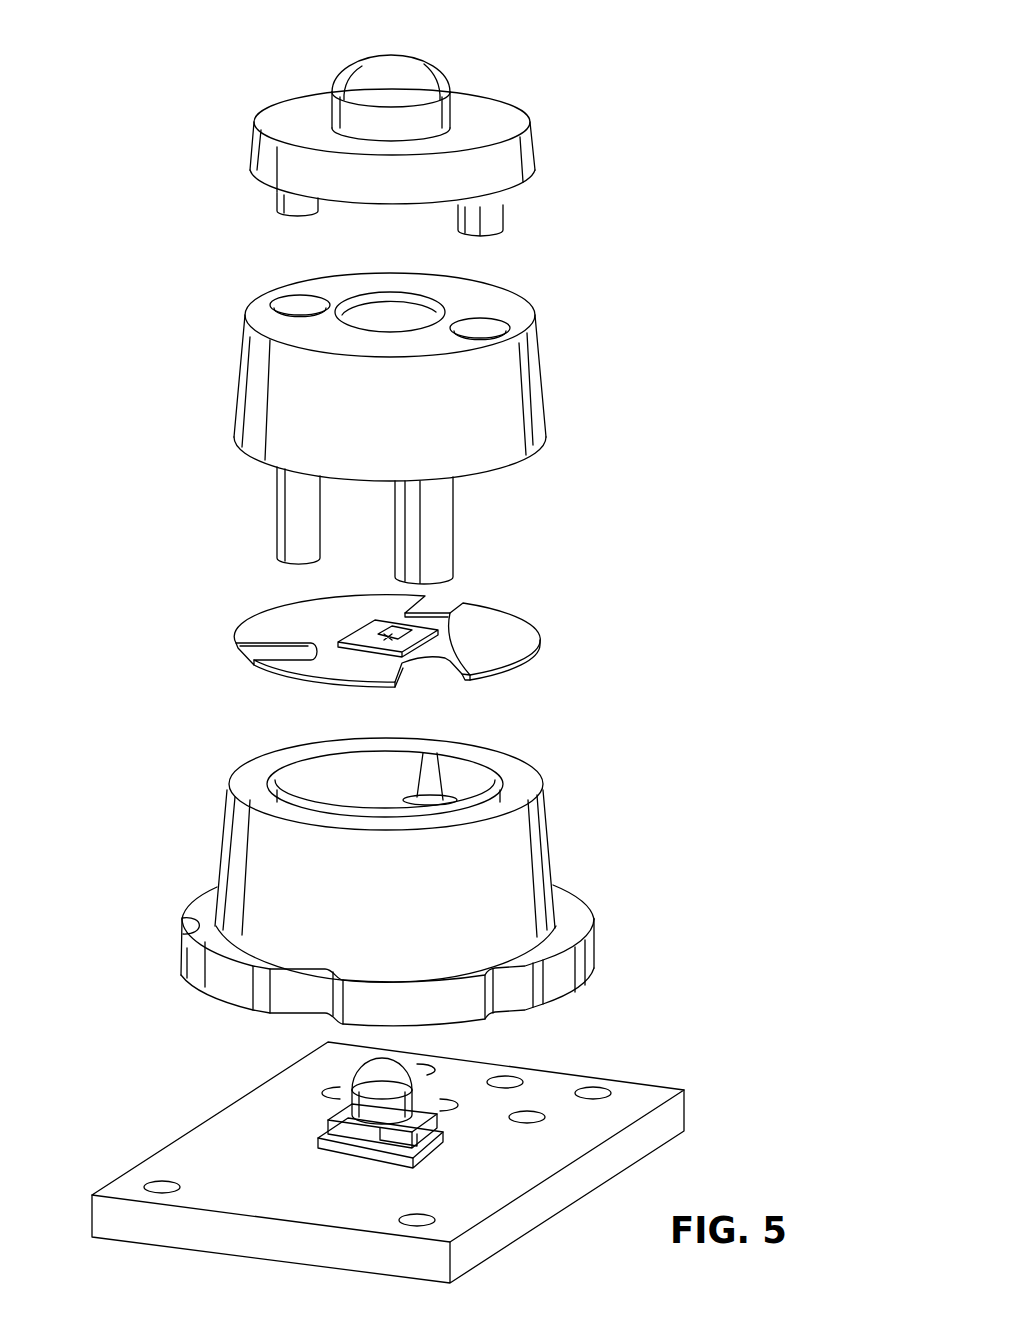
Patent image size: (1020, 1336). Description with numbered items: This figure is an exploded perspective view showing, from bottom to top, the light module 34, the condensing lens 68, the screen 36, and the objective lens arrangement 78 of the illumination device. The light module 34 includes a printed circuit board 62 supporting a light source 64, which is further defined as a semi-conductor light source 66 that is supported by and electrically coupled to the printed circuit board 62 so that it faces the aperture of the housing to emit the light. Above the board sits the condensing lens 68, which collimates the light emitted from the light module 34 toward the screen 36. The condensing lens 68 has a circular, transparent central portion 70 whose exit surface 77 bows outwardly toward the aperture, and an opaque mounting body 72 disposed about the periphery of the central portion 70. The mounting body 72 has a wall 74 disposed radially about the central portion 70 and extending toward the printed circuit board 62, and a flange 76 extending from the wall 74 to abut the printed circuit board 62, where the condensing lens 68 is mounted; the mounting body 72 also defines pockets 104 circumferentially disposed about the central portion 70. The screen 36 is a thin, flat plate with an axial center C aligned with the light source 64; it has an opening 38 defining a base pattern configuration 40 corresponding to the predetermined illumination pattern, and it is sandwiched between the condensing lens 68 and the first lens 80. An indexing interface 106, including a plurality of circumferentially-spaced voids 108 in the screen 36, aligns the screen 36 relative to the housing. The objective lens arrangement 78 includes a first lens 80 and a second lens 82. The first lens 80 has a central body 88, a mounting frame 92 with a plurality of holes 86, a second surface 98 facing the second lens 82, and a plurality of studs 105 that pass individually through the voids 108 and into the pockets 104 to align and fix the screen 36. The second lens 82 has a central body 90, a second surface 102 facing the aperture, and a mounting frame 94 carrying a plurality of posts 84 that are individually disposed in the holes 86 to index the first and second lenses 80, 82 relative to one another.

The light module 34 is at (415, 1136).
The screen 36 is at (545, 648).
The opening 38 is at (332, 625).
The base pattern configuration 40 is at (385, 641).
The printed circuit board 62 is at (653, 1130).
The light source 64 is at (345, 1100).
The semi-conductor light source 66 is at (418, 1090).
The condensing lens 68 is at (371, 870).
The central portion 70 is at (400, 806).
The mounting body 72 is at (555, 855).
The wall 74 is at (520, 830).
The flange 76 is at (195, 982).
The exit surface 77 is at (380, 806).
The objective lens arrangement 78 is at (390, 132).
The first lens 80 is at (387, 388).
The second lens 82 is at (532, 157).
The posts 84 is at (283, 203).
The holes 86 is at (298, 303).
The central body 88 is at (420, 312).
The central body 90 is at (416, 80).
The mounting frame 92 is at (255, 388).
The mounting frame 94 is at (262, 155).
The second surface 98 is at (378, 305).
The second surface 102 is at (360, 80).
The pockets 104 is at (437, 779).
The studs 105 is at (288, 515).
The indexing interface 106 is at (381, 625).
The voids 108 is at (450, 600).
The axial center C is at (385, 632).